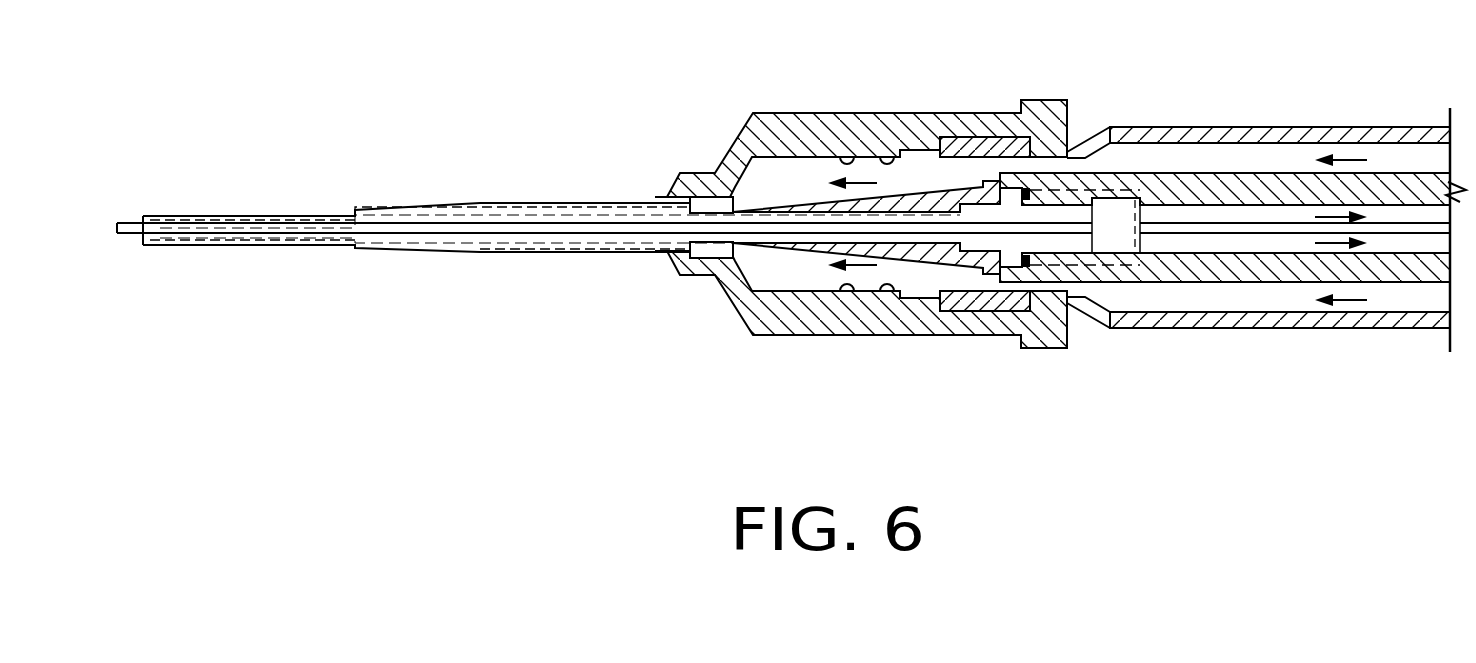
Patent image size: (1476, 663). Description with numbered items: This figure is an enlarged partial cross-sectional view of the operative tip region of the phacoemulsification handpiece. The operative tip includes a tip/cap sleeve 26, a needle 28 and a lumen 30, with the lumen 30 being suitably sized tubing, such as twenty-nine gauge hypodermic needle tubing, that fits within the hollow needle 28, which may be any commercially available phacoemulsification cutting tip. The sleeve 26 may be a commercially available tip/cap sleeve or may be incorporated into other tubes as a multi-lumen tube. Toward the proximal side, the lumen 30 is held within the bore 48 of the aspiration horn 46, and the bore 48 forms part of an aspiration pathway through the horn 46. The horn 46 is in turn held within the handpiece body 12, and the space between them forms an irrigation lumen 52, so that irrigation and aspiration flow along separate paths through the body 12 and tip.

The handpiece body 12 is at (1337, 112).
The tip/cap sleeve 26 is at (768, 100).
The needle 28 is at (245, 213).
The lumen 30 is at (127, 238).
The aspiration horn 46 is at (1197, 298).
The bore 48 is at (1232, 212).
The irrigation lumen 52 is at (793, 178).